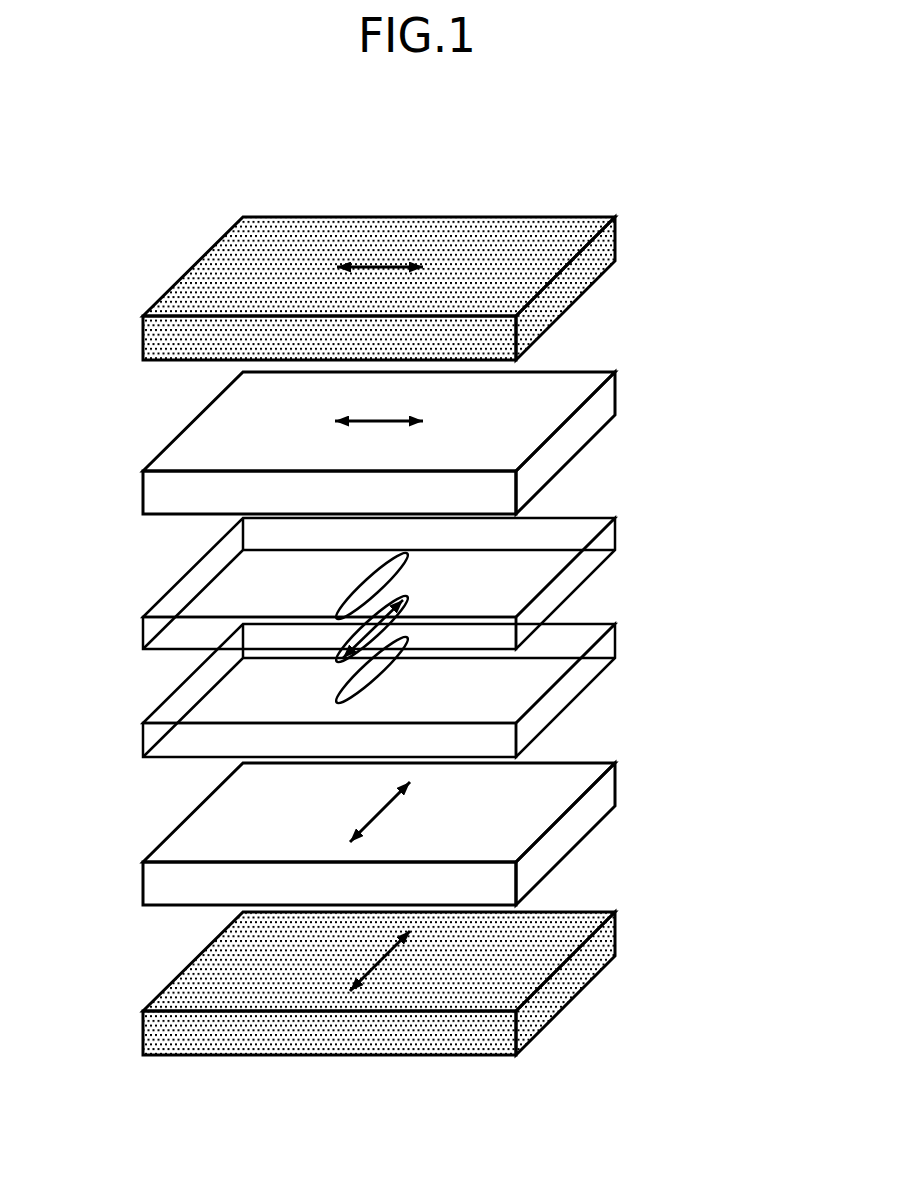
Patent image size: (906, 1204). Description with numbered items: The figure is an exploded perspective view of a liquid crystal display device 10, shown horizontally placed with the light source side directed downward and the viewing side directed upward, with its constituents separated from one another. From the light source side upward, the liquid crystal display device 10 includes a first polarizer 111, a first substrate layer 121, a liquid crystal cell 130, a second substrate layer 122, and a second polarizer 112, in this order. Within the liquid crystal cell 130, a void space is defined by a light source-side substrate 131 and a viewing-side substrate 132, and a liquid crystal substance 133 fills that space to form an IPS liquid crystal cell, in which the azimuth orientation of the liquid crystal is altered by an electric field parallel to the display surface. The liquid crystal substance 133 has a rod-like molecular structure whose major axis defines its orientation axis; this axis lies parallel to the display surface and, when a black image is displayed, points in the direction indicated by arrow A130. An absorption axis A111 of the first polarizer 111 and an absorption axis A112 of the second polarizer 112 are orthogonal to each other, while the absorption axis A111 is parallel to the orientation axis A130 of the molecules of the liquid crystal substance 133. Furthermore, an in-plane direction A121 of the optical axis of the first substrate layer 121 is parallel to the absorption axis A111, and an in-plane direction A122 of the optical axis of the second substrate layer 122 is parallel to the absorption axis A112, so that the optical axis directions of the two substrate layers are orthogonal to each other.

The liquid crystal display device 10 is at (568, 198).
The first polarizer 111 is at (565, 980).
The second polarizer 112 is at (565, 290).
The first substrate layer 121 is at (565, 830).
The second substrate layer 122 is at (565, 440).
The liquid crystal cell 130 is at (411, 637).
The light source-side substrate 131 is at (595, 662).
The viewing-side substrate 132 is at (565, 582).
The liquid crystal substance 133 is at (370, 670).
The absorption axis of first polarizer A111 is at (378, 960).
The absorption axis of second polarizer A112 is at (377, 267).
The in-plane direction of optical axis of first substrate layer A121 is at (378, 812).
The in-plane direction of optical axis of second substrate layer A122 is at (377, 420).
The orientation axis of liquid crystal substance A130 is at (350, 640).